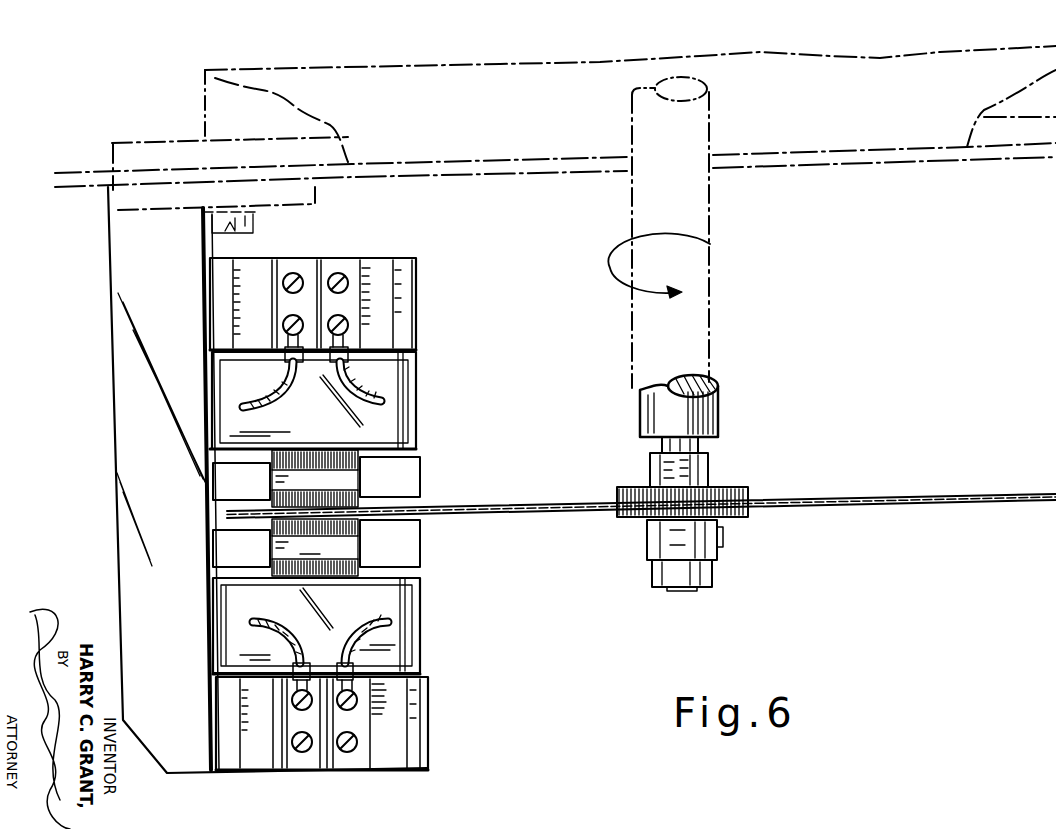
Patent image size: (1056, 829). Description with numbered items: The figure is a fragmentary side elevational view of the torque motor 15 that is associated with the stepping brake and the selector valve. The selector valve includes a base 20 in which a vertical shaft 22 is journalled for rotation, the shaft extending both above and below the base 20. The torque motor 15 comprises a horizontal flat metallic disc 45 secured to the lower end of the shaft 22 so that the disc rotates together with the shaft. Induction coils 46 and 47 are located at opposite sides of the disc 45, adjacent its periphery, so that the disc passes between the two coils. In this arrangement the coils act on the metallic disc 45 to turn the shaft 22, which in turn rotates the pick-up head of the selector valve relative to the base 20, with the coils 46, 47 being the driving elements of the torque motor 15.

The torque motor 15 is at (612, 635).
The base 20 is at (997, 163).
The vertical shaft 22 is at (718, 421).
The horizontal flat metallic disc 45 is at (935, 503).
The induction coil 46 is at (417, 424).
The induction coil 47 is at (420, 622).